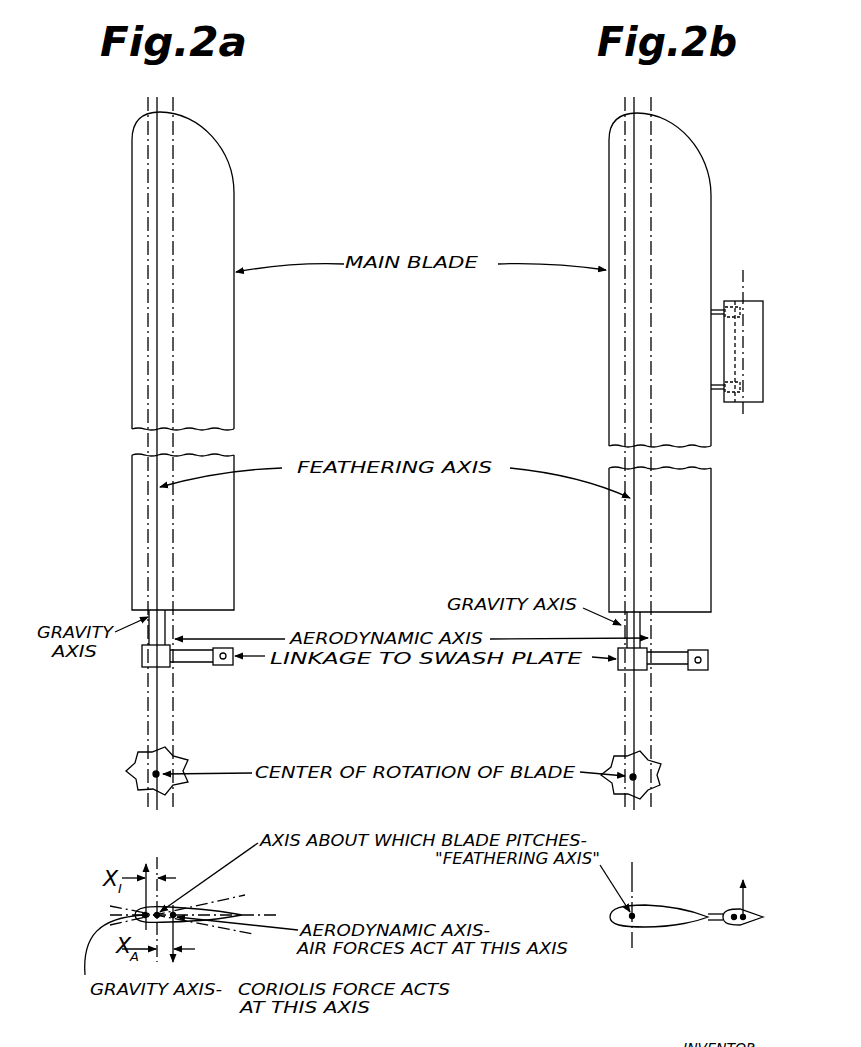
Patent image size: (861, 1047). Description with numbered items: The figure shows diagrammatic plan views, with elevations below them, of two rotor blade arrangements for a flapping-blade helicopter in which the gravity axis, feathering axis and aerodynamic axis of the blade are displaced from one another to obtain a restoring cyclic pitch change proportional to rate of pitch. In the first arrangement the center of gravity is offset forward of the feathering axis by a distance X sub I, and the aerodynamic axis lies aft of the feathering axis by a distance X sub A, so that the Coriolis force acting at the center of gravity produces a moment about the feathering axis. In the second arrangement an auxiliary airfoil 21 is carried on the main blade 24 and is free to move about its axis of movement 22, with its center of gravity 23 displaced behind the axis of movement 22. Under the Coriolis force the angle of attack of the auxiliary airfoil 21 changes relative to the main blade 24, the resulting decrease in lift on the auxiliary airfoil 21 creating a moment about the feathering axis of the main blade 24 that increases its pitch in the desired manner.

The auxiliary airfoil 21 is at (765, 320).
The axis of movement 22 is at (735, 357).
The center of gravity 23 is at (744, 360).
The main blade 24 is at (713, 197).